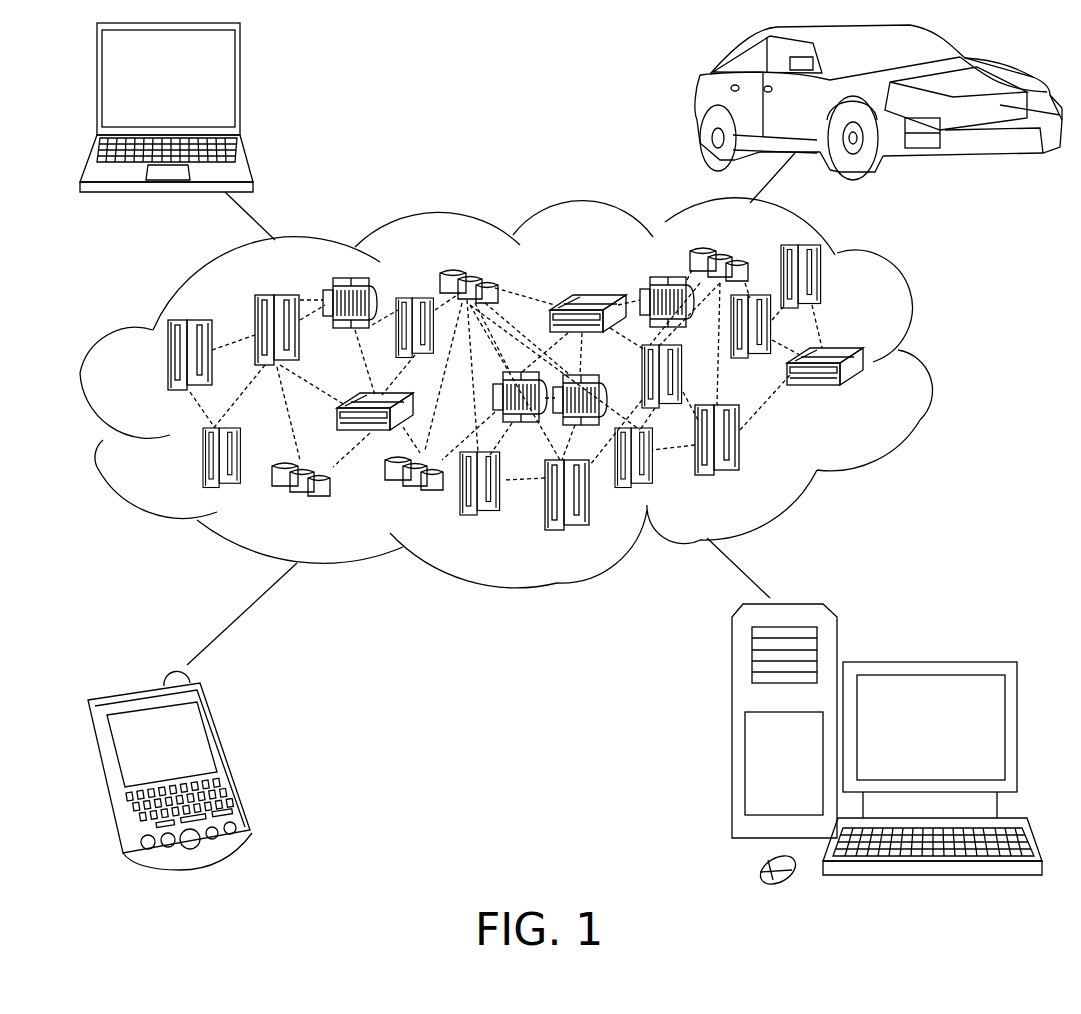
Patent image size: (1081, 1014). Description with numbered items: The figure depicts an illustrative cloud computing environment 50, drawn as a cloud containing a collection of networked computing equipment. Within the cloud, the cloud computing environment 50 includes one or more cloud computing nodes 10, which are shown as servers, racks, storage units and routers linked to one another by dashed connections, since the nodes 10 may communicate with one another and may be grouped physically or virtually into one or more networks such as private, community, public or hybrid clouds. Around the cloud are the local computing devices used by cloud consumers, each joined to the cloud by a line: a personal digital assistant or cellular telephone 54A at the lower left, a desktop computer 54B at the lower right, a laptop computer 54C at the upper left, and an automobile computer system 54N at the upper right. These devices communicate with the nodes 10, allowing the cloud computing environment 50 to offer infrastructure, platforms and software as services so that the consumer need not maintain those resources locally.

The cloud computing node 10 is at (882, 401).
The cloud computing environment 50 is at (927, 368).
The personal digital assistant or cellular telephone 54A is at (228, 760).
The desktop computer 54B is at (926, 660).
The laptop computer 54C is at (241, 90).
The automobile computer system 54N is at (700, 102).